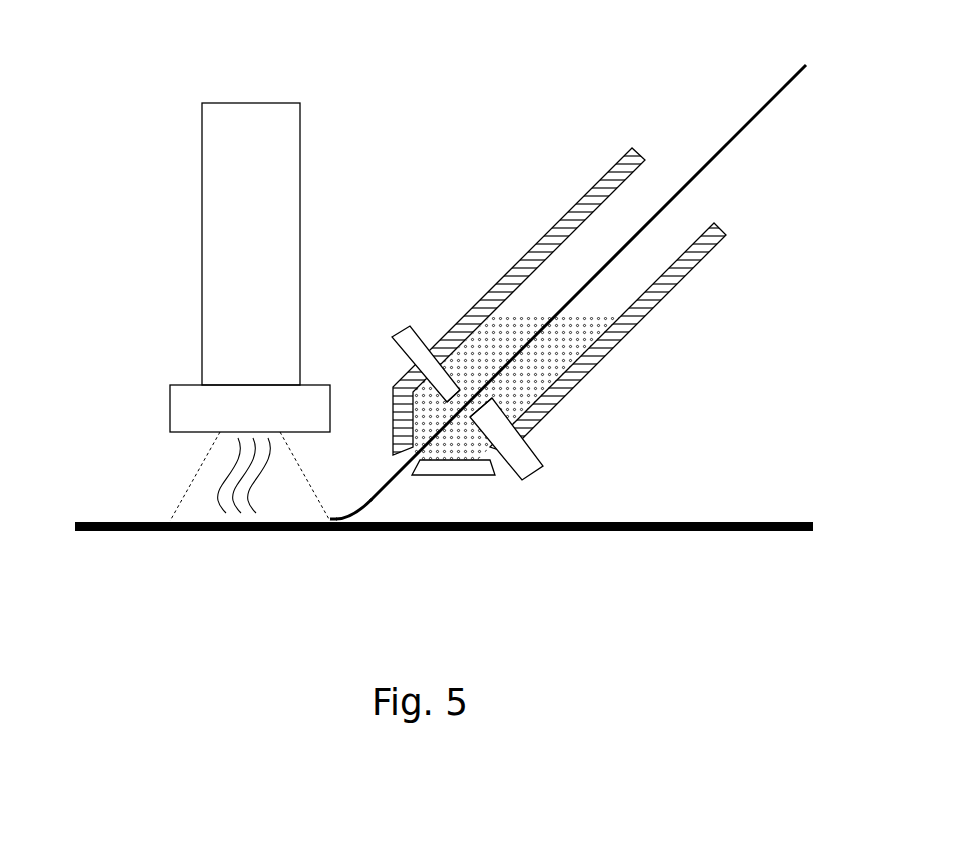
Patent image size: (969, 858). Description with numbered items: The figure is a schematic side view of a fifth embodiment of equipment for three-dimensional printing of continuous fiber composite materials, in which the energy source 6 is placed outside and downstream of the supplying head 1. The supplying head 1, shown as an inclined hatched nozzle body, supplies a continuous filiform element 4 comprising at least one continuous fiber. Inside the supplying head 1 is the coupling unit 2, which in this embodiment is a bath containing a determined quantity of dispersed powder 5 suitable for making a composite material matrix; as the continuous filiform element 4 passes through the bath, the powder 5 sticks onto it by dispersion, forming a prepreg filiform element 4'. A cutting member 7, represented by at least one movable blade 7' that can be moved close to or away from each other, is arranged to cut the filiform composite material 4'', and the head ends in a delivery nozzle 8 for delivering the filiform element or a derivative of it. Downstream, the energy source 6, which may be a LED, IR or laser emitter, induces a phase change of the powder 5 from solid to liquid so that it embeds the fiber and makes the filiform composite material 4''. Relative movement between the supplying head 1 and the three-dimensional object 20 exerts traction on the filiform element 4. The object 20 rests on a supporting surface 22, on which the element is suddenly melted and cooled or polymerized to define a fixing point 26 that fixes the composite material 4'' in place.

The supplying head 1 is at (710, 247).
The coupling unit 2 is at (538, 363).
The continuous filiform element 4 is at (588, 266).
The prepreg filiform element 4' is at (368, 561).
The filiform composite material 4'' is at (207, 473).
The powder 5 is at (510, 337).
The energy source 6 is at (256, 103).
The cutting member 7 is at (511, 403).
The movable blade 7' is at (409, 348).
The delivery nozzle 8 is at (448, 478).
The three-dimensional object 20 is at (143, 518).
The supporting surface 22 is at (752, 532).
The fixing point 26 is at (82, 521).